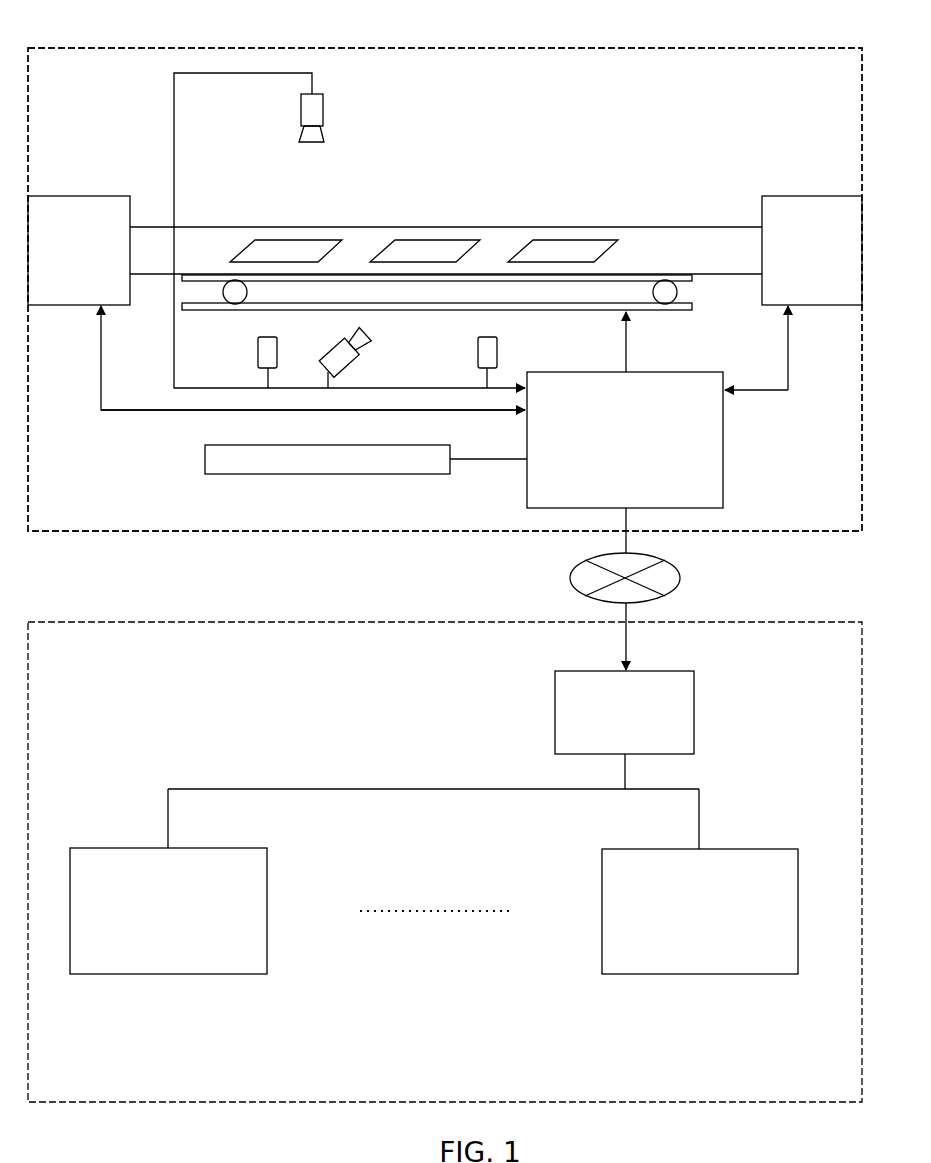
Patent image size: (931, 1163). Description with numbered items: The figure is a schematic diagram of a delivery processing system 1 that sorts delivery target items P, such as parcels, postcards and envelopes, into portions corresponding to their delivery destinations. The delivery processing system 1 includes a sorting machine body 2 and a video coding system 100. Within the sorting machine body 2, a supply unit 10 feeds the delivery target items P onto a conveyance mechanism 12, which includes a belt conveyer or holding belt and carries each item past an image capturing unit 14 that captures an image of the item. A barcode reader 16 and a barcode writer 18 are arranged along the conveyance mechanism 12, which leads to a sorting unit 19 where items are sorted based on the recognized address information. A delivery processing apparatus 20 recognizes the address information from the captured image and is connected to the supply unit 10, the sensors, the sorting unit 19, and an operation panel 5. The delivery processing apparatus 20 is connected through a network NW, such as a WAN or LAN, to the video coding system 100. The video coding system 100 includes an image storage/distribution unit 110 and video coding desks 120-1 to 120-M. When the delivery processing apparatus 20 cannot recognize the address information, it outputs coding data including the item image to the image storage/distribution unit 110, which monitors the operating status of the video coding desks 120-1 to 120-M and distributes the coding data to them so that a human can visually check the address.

The delivery processing system 1 is at (152, 47).
The sorting machine body 2 is at (700, 48).
The supply unit 10 is at (100, 195).
The conveyance mechanism 12 is at (468, 203).
The image capturing unit 14 is at (326, 108).
The barcode reader 16 is at (257, 350).
The barcode writer 18 is at (499, 350).
The sorting unit 19 is at (790, 195).
The delivery processing apparatus 20 is at (669, 372).
The operation panel 5 is at (413, 445).
The network NW is at (682, 578).
The video coding system 100 is at (228, 622).
The image storage/distribution unit 110 is at (670, 672).
The video coding desk 120-1 is at (212, 849).
The video coding desk 120-M is at (744, 849).
The delivery target item P is at (330, 252).